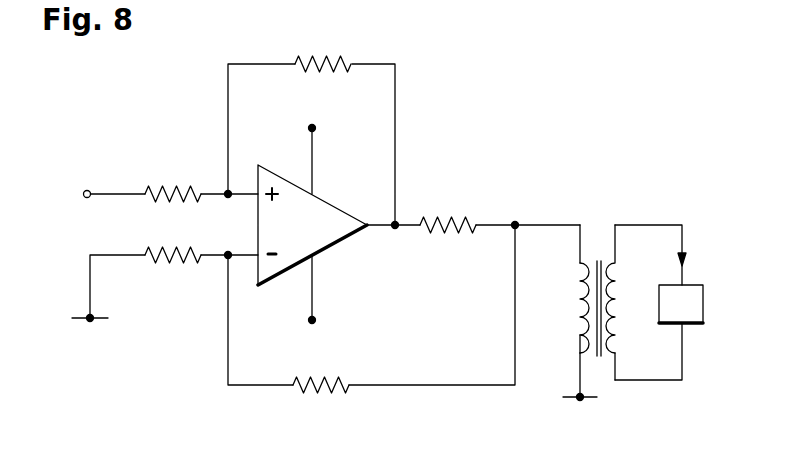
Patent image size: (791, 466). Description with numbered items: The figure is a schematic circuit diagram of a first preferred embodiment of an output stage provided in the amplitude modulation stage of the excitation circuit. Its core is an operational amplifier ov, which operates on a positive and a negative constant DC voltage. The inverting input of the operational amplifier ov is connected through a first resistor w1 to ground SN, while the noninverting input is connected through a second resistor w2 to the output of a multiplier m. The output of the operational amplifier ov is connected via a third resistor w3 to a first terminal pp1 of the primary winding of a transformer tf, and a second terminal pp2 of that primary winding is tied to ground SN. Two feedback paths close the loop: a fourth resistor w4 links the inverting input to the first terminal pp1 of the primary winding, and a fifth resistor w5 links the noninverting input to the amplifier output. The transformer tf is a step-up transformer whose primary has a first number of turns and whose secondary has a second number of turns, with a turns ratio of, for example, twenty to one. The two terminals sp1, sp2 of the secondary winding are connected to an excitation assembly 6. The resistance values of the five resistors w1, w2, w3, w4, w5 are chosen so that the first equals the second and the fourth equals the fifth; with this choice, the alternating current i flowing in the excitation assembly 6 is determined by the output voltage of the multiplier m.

The first resistor w1 is at (188, 262).
The second resistor w2 is at (176, 189).
The third resistor w3 is at (447, 218).
The fourth resistor w4 is at (316, 392).
The fifth resistor w5 is at (322, 58).
The operational amplifier ov is at (336, 236).
The multiplier m is at (64, 187).
The ground SN is at (334, 377).
The transformer tf is at (595, 264).
The first terminal of the primary winding pp1 is at (558, 303).
The second terminal of the primary winding pp2 is at (555, 352).
The secondary winding terminal sp1 is at (634, 289).
The secondary winding terminal sp2 is at (639, 359).
The alternating current i is at (693, 250).
The excitation assembly 6 is at (688, 305).